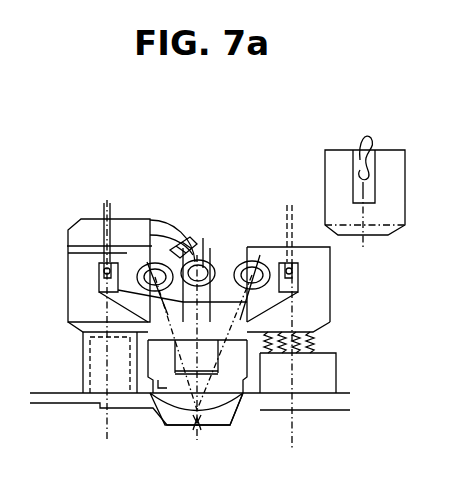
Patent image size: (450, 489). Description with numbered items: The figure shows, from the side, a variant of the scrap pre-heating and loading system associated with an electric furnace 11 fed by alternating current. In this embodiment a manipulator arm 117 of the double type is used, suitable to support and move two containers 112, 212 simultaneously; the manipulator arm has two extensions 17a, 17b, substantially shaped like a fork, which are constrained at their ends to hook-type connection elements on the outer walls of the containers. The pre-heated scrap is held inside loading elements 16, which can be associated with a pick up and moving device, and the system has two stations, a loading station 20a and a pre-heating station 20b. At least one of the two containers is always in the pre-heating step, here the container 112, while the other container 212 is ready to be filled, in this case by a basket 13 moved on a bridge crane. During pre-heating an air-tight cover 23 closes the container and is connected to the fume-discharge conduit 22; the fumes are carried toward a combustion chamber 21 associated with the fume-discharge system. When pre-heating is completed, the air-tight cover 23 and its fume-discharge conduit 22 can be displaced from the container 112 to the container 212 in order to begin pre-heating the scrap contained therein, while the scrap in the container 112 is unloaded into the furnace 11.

The electric furnace 11 is at (235, 387).
The basket 13 is at (342, 157).
The loading elements 16 is at (57, 255).
The extension 17a is at (97, 262).
The extension 17b is at (330, 290).
The loading station 20a is at (345, 340).
The pre-heating station 20b is at (70, 342).
The combustion chamber 21 is at (117, 382).
The fume-discharge conduit 22 is at (168, 228).
The air-tight cover 23 is at (125, 230).
The container 112 is at (87, 262).
The manipulator arm 117 is at (268, 258).
The container 212 is at (317, 263).